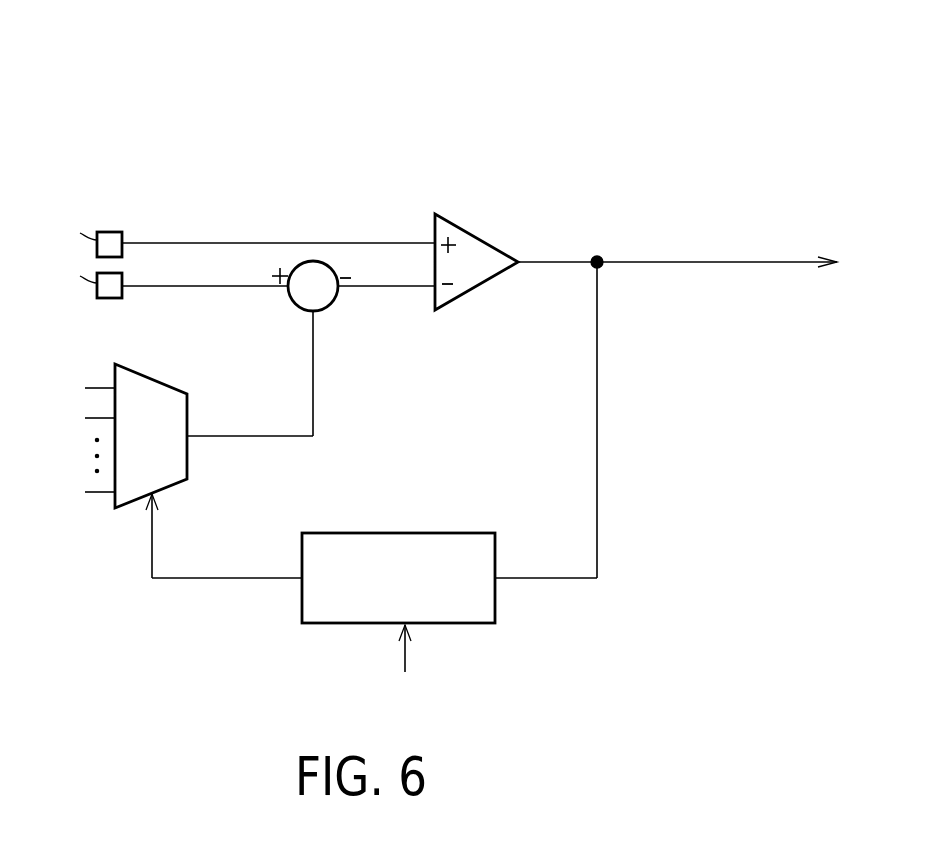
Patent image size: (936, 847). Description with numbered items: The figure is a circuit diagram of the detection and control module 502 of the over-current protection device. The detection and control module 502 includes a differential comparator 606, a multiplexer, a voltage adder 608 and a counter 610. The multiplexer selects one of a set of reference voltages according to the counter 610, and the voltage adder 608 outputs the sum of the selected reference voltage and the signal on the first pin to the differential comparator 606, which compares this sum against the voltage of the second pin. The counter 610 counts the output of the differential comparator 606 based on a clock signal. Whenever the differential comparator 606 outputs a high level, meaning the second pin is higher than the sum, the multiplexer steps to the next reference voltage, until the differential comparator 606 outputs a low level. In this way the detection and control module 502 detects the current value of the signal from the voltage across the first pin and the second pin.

The detection and control module 502 is at (827, 130).
The differential comparator 606 is at (482, 233).
The voltage adder 608 is at (333, 310).
The counter 610 is at (412, 533).